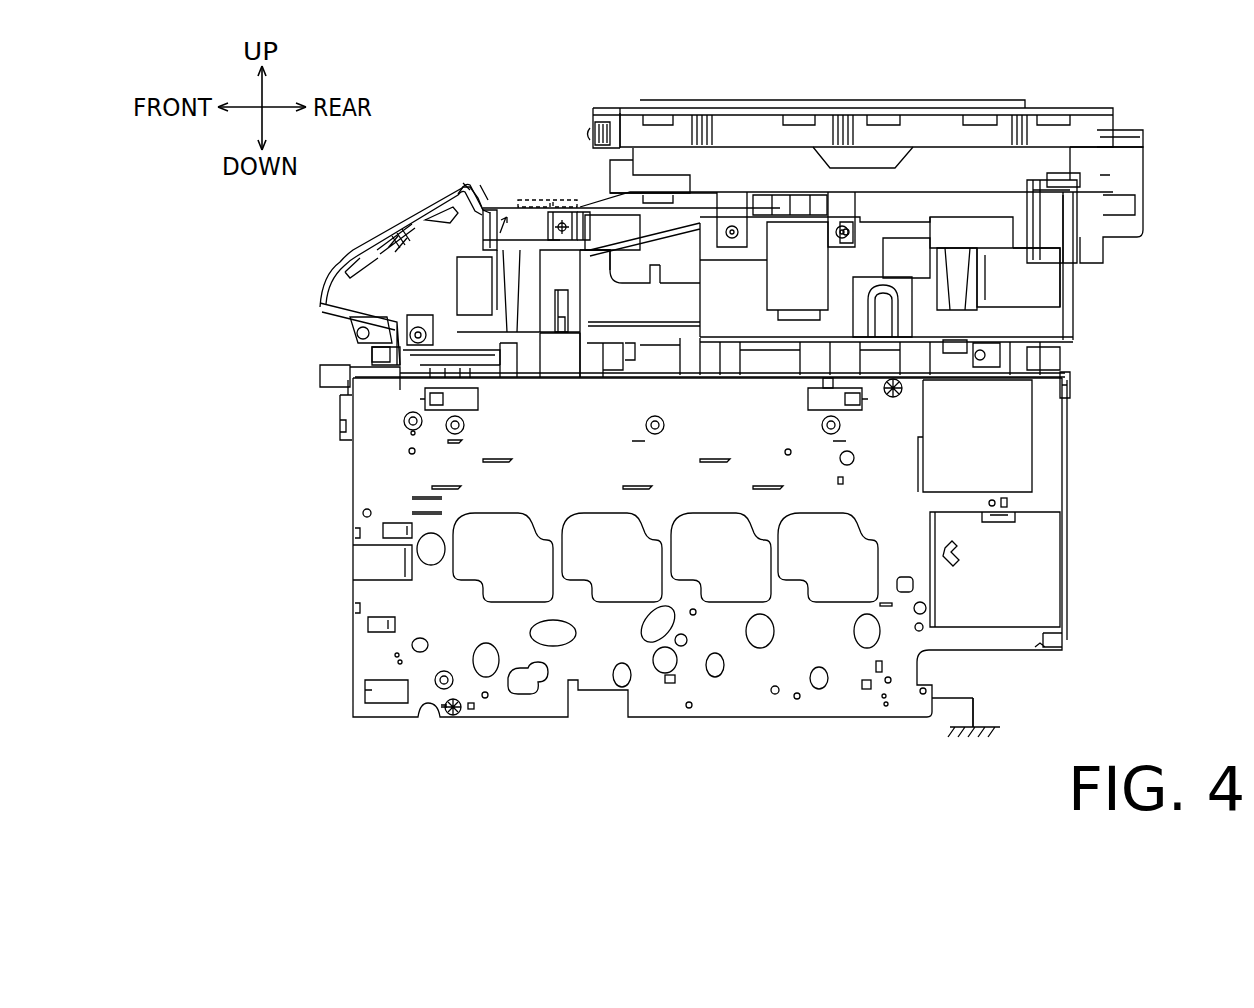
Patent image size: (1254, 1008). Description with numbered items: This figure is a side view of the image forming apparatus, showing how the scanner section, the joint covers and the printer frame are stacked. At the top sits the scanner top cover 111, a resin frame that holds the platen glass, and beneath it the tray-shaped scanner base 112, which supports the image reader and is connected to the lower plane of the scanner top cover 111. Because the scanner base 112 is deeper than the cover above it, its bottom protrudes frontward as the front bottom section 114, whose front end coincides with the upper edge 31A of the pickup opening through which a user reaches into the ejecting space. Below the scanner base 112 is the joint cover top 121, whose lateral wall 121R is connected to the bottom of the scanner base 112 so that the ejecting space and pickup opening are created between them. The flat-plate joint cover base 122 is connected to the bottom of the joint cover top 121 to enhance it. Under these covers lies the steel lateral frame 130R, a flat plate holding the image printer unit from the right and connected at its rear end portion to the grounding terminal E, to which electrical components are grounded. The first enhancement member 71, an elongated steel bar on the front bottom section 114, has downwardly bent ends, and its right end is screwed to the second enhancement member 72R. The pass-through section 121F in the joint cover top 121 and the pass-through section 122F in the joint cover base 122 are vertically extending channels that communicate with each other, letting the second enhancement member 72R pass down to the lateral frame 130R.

The lateral frame 130R is at (347, 659).
The joint cover top 121 is at (357, 247).
The upper edge 31A is at (460, 223).
The front bottom section 114 is at (483, 227).
The second enhancement member 72R is at (577, 218).
The first enhancement member 71 is at (545, 196).
The scanner top cover 111 is at (1115, 107).
The scanner base 112 is at (1090, 176).
The lateral wall 121R is at (997, 260).
The joint cover base 122 is at (372, 352).
The pass-through section 122F is at (560, 358).
The pass-through section 121F is at (570, 265).
The grounding terminal E is at (992, 718).